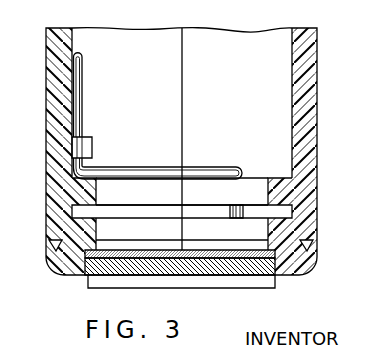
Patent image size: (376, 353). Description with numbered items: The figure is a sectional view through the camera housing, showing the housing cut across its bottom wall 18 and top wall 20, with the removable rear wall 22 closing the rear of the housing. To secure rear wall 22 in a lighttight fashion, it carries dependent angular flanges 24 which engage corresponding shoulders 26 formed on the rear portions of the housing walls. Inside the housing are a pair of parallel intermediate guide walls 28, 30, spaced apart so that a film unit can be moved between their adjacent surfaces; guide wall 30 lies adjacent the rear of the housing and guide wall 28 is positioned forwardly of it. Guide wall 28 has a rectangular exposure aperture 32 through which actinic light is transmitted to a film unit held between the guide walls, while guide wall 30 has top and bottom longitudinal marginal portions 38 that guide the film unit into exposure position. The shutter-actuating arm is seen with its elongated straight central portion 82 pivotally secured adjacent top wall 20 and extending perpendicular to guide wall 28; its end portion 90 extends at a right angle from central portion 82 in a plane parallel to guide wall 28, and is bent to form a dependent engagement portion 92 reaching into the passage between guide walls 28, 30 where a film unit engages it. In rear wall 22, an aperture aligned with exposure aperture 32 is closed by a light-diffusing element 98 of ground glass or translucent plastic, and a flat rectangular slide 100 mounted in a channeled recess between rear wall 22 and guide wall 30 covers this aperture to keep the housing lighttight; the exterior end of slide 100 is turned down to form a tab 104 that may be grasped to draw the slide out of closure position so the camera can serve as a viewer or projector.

The bottom wall 18 is at (313, 58).
The top wall 20 is at (52, 44).
The rear wall 22 is at (289, 278).
The angular flanges 24 is at (319, 246).
The shoulders 26 is at (316, 247).
The intermediate guide wall 28 is at (80, 194).
The intermediate guide wall 30 is at (284, 224).
The exposure aperture 32 is at (154, 192).
The longitudinal marginal portions 38 is at (80, 218).
The central portion 82 is at (82, 72).
The end portion 90 is at (223, 160).
The engagement portion 92 is at (232, 209).
The light-diffusing element 98 is at (201, 262).
The slide 100 is at (143, 254).
The tab 104 is at (100, 288).